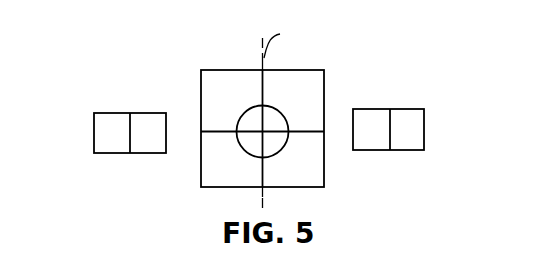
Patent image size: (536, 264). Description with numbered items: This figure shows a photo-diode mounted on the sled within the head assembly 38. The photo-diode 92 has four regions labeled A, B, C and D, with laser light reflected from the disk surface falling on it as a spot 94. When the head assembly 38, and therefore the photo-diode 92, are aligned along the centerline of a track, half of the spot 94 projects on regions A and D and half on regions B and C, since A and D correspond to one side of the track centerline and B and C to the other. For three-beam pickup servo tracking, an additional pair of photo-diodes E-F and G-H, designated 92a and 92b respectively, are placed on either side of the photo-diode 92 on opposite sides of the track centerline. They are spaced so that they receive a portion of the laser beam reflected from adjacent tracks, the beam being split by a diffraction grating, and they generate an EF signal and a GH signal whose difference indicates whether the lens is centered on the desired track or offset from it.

The head assembly 38 is at (166, 63).
The photo-diode 92 is at (324, 87).
The spot 94 is at (278, 124).
The photo-diode E-F 92a is at (94, 136).
The photo-diode G-H 92b is at (424, 130).